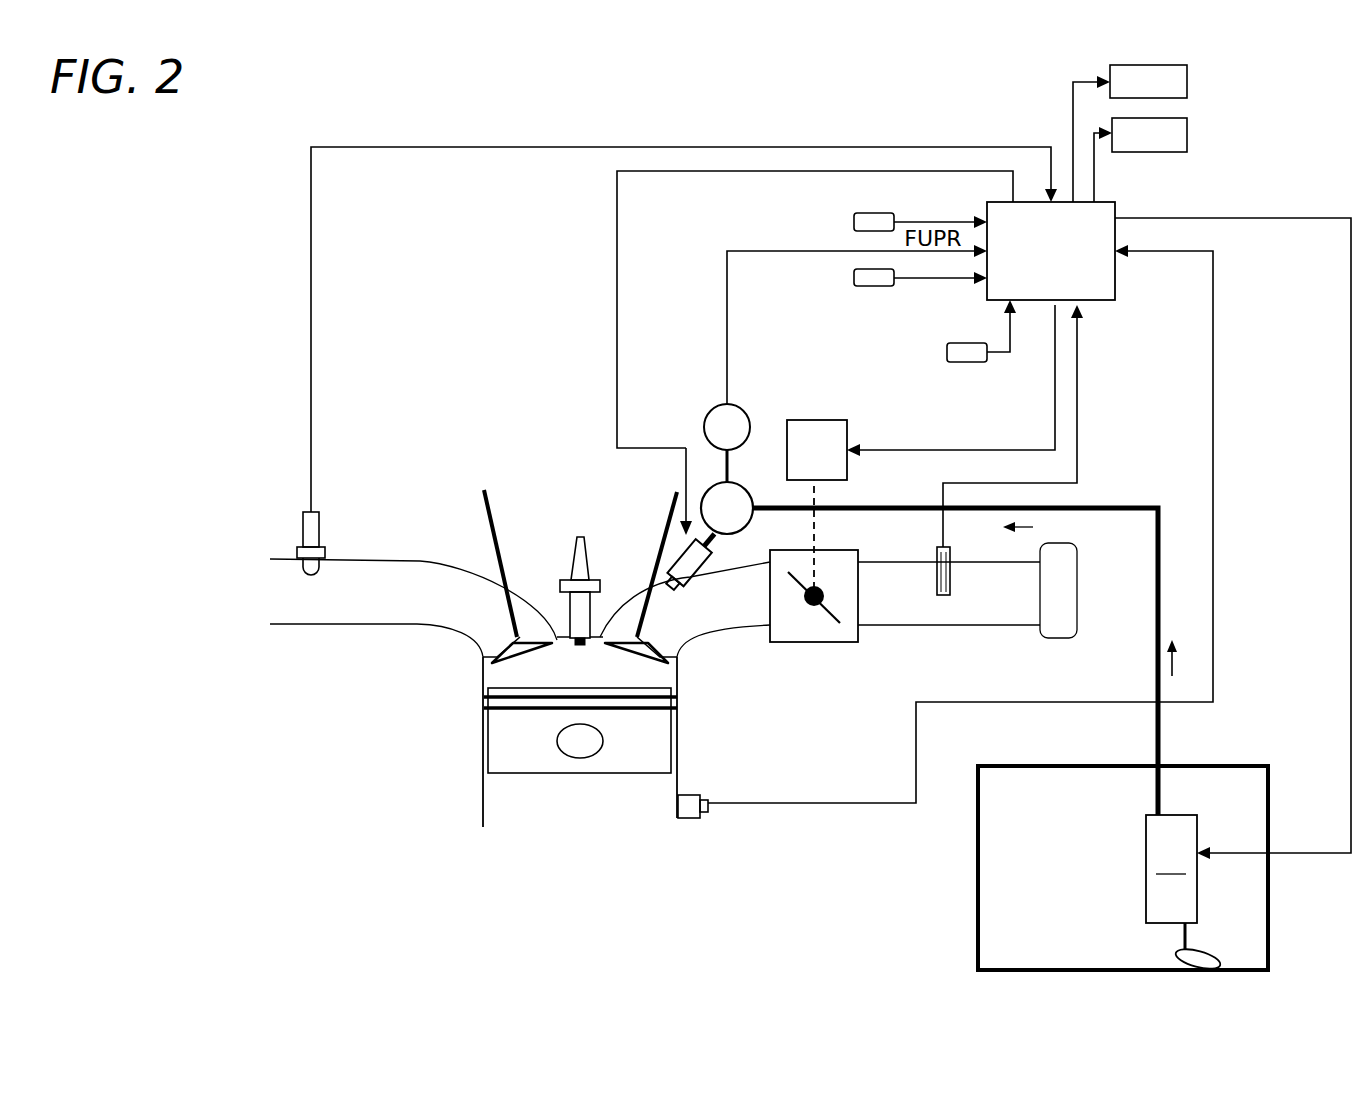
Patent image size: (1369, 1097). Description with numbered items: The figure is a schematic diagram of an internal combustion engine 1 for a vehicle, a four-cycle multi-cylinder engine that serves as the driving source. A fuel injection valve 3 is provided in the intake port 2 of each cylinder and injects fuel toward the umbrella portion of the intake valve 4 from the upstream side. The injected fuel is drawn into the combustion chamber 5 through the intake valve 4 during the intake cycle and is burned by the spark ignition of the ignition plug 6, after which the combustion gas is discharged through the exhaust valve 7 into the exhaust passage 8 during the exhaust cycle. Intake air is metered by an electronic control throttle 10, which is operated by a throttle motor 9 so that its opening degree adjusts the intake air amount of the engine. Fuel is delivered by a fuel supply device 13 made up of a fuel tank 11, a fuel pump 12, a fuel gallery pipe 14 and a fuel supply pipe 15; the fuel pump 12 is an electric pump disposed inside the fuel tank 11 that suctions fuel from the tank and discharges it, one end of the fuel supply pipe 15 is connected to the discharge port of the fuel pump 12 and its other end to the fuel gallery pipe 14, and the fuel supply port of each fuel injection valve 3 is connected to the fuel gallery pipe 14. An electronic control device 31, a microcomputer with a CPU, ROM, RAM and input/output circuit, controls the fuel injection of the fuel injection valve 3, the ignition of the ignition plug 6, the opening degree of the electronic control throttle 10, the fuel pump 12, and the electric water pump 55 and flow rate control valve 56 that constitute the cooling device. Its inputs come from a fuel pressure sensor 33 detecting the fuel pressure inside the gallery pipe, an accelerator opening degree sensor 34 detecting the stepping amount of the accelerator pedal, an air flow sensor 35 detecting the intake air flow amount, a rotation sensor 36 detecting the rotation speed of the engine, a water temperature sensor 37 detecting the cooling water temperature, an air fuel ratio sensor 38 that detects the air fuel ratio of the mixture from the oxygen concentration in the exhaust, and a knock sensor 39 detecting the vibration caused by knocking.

The internal combustion engine 1 is at (500, 424).
The intake port 2 is at (675, 617).
The fuel injection valve 3 is at (673, 560).
The intake valve 4 is at (622, 647).
The combustion chamber 5 is at (510, 672).
The ignition plug 6 is at (578, 572).
The exhaust valve 7 is at (513, 643).
The exhaust passage 8 is at (410, 582).
The throttle motor 9 is at (830, 418).
The electronic control throttle 10 is at (833, 623).
The fuel tank 11 is at (1245, 763).
The fuel pump 12 is at (1198, 825).
The fuel supply device 13 is at (1262, 626).
The fuel gallery pipe 14 is at (712, 500).
The fuel supply pipe 15 is at (1140, 508).
The electronic control device 31 is at (1117, 292).
The fuel pressure sensor 33 is at (734, 404).
The accelerator opening degree sensor 34 is at (850, 223).
The air flow sensor 35 is at (950, 580).
The rotation sensor 36 is at (880, 280).
The water temperature sensor 37 is at (950, 360).
The air fuel ratio sensor 38 is at (297, 552).
The knock sensor 39 is at (706, 795).
The electric water pump 55 is at (1190, 82).
The flow rate control valve 56 is at (1189, 137).